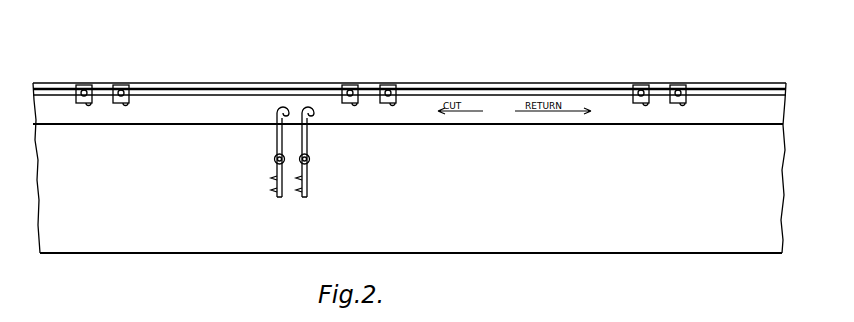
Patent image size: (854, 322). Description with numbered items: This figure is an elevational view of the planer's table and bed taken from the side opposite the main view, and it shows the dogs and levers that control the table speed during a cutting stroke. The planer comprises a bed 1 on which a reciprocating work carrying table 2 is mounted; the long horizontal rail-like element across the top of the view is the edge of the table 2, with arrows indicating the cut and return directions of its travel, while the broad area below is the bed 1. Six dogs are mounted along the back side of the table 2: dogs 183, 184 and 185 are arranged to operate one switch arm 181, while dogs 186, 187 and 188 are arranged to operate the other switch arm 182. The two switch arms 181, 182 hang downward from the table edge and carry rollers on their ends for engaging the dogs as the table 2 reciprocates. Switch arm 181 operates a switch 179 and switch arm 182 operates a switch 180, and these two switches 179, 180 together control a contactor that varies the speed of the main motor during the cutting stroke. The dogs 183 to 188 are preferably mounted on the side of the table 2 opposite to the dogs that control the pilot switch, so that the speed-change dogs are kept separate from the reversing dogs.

The bed 1 is at (592, 253).
The work carrying table 2 is at (523, 86).
The switch 179 is at (298, 197).
The switch 180 is at (277, 197).
The switch arm 181 is at (310, 139).
The switch arm 182 is at (277, 139).
The dog 183 is at (140, 68).
The dog 184 is at (390, 85).
The dog 185 is at (688, 68).
The dog 186 is at (84, 85).
The dog 187 is at (346, 85).
The dog 188 is at (635, 85).